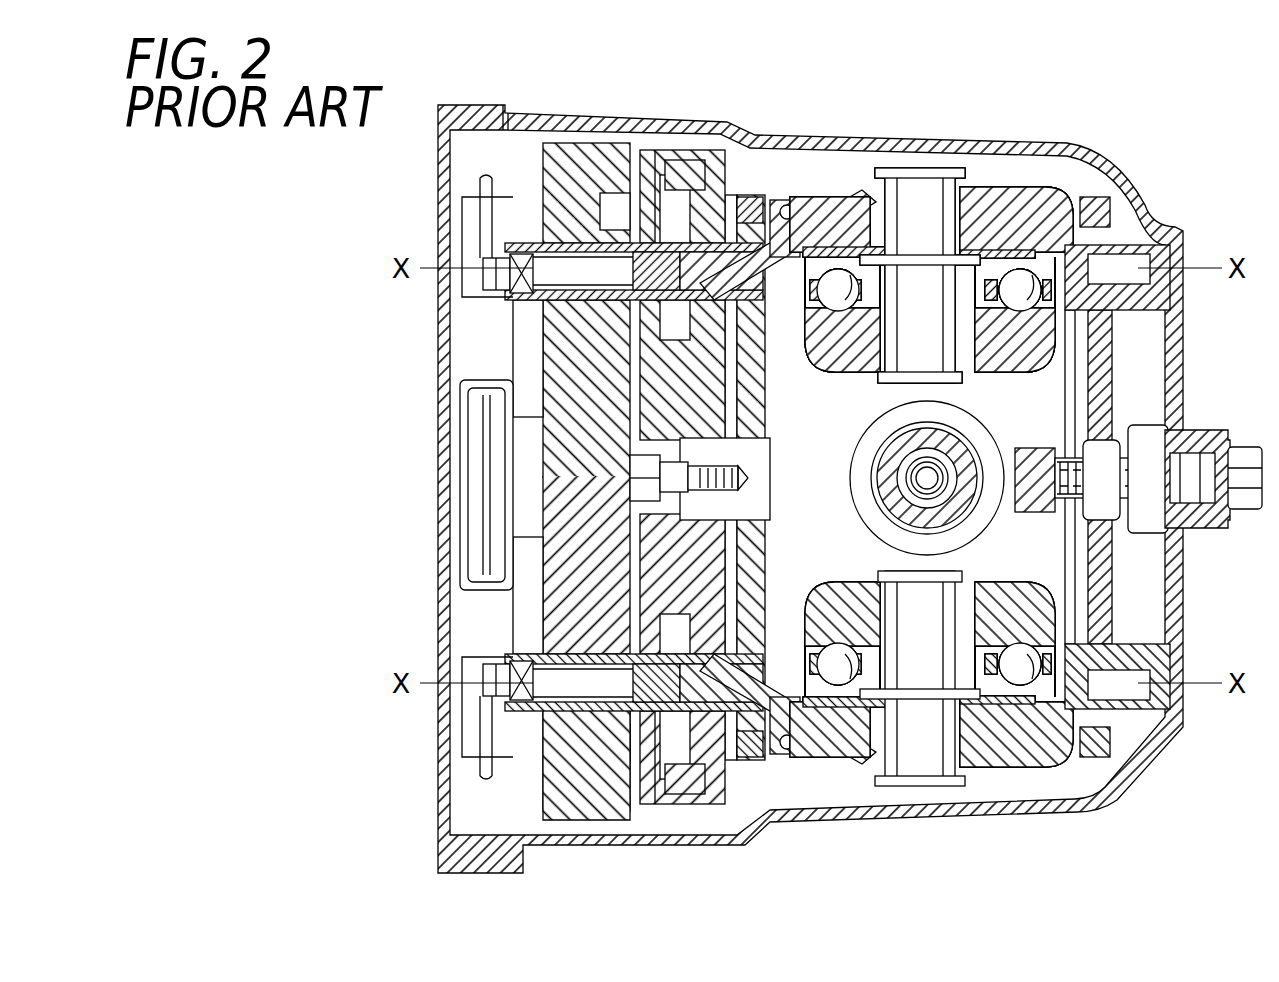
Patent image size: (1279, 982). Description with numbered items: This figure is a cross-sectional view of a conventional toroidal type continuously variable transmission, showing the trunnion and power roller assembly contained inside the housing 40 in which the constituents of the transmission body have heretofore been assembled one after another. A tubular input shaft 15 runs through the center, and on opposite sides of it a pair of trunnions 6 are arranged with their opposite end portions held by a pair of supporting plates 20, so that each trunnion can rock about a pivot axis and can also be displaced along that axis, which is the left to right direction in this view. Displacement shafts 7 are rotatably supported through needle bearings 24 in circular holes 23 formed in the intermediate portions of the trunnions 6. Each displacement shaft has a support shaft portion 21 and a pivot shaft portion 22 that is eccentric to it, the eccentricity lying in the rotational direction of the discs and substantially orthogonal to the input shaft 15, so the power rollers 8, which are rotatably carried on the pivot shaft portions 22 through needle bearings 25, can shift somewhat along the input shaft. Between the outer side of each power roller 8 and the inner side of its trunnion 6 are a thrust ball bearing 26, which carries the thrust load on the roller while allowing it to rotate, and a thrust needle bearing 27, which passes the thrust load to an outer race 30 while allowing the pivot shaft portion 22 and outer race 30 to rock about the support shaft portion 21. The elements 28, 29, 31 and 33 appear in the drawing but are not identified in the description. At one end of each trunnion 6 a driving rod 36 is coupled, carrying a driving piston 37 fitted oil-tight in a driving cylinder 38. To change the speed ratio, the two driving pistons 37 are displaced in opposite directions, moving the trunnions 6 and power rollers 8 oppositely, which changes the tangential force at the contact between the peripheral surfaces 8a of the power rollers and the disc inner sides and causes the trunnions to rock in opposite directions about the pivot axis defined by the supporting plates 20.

The trunnions 6 is at (1098, 195).
The displacement shafts 7 is at (970, 247).
The power rollers 8 is at (836, 345).
The peripheral surfaces 8a is at (1045, 350).
The input shaft 15 is at (884, 434).
The supporting plates 20 is at (770, 522).
The support shaft portions 21 is at (905, 195).
The pivot shaft portions 22 is at (990, 352).
The circular holes 23 is at (886, 200).
The needle bearings 24 is at (976, 748).
The needle bearings 25 is at (856, 596).
The thrust ball bearings 26 is at (1030, 360).
The thrust needle bearings 27 is at (985, 258).
The retaining ring 28 is at (808, 740).
The spacer ring 29 is at (1036, 266).
The outer races 30 is at (1052, 244).
The retaining plate 31 is at (1004, 256).
The lever arm 33 is at (815, 245).
The driving rods 36 is at (565, 690).
The driving pistons 37 is at (668, 160).
The driving cylinders 38 is at (640, 150).
The housing 40 is at (1192, 215).